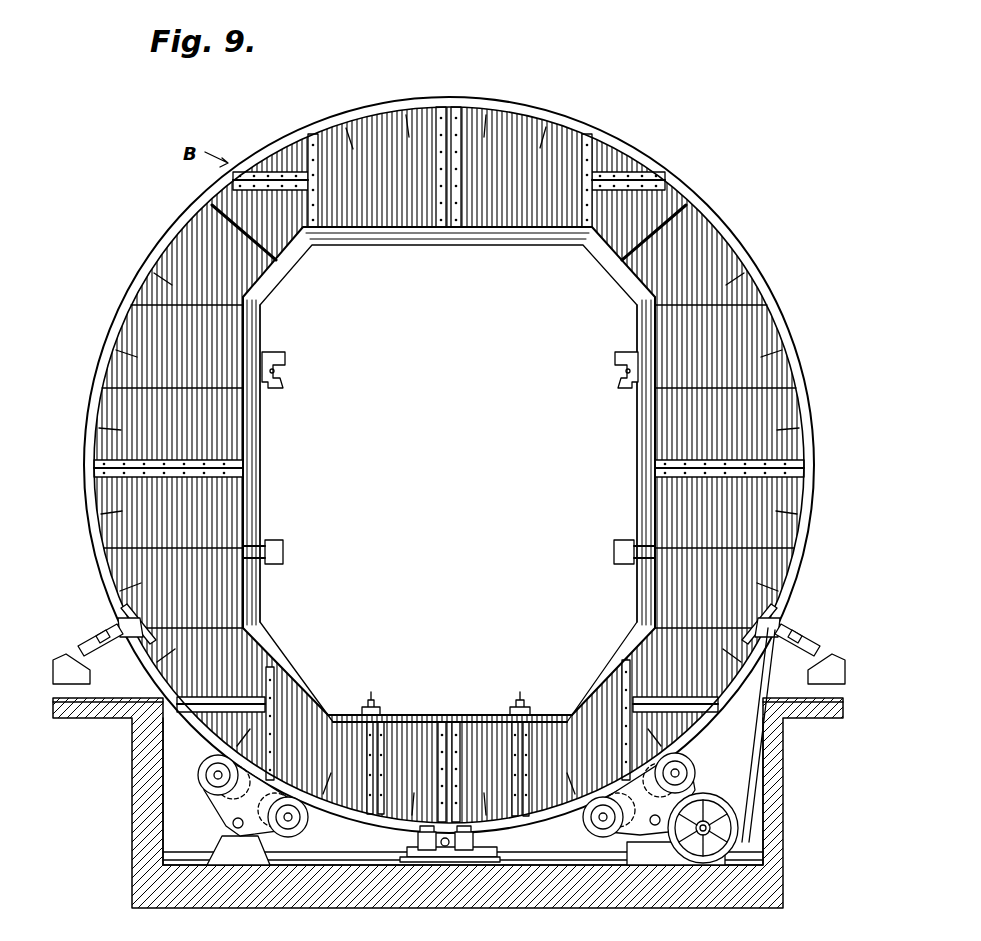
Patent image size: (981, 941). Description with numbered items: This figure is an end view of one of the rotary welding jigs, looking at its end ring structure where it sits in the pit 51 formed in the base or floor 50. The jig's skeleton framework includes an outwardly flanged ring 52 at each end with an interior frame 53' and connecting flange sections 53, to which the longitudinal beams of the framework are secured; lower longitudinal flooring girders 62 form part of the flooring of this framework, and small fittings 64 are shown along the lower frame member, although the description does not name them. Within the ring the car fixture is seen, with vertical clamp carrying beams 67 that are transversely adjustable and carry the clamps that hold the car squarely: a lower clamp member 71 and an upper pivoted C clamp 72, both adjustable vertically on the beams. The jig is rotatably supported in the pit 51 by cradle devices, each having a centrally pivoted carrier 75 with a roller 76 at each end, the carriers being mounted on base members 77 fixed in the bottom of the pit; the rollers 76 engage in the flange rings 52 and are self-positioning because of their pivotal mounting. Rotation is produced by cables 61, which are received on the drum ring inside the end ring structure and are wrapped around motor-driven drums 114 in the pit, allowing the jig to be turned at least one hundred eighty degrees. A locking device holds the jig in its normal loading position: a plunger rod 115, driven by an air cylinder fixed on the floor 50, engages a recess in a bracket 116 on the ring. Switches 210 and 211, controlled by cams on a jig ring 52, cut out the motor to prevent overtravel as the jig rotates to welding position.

The flange sections 53 is at (438, 465).
The outwardly flanged ring 52 is at (768, 293).
The interior frame 53' is at (449, 474).
The vertical clamp carrying beams 67 is at (256, 471).
The upper pivoted C clamp 72 is at (272, 354).
The lower clamp member 71 is at (276, 546).
The bracket 116 is at (122, 612).
The plunger rod 115 is at (100, 636).
The base or floor 50 is at (110, 718).
The pit 51 is at (165, 796).
The cables 61 is at (556, 846).
The base members 77 is at (236, 848).
The carrier 75 is at (645, 918).
The roller 76 is at (204, 792).
The drums 114 is at (738, 829).
The lower longitudinal flooring girders 62 is at (406, 716).
The clamp 64 is at (372, 694).
The switch 210 is at (426, 856).
The switch 211 is at (470, 856).